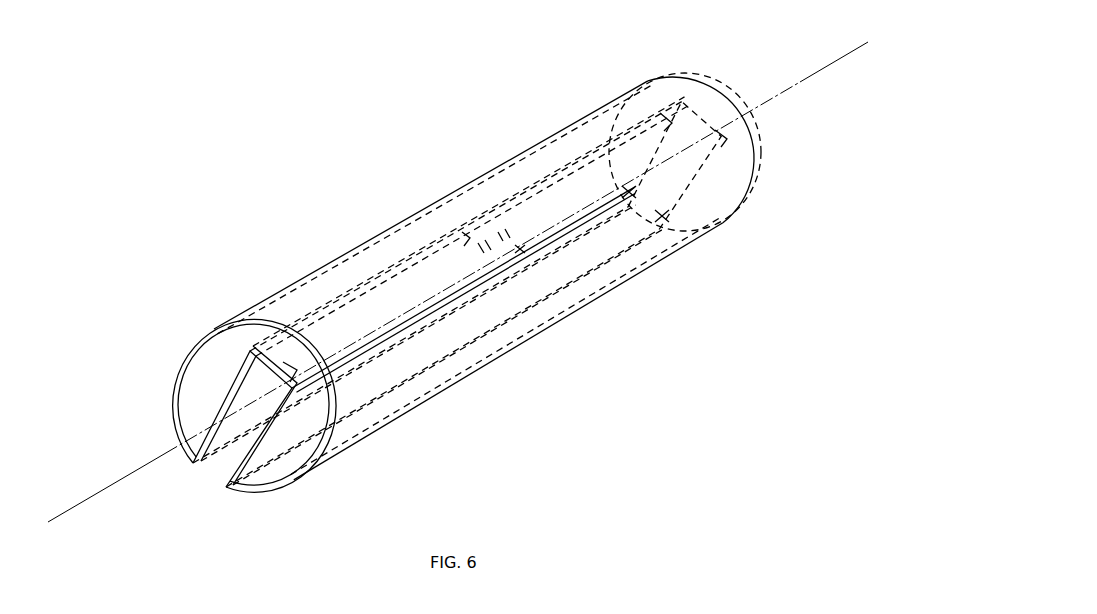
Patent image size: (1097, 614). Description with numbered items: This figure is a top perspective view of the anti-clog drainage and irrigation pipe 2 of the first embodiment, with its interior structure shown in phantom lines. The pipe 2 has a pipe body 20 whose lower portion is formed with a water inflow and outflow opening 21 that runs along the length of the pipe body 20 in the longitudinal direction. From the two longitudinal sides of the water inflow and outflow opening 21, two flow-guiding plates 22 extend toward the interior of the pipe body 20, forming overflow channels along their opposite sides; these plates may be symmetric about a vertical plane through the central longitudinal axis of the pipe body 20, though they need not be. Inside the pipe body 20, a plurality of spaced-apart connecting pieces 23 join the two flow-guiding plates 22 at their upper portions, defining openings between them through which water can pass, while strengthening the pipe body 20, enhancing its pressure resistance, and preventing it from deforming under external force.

The anti-clog drainage and irrigation pipe 2 is at (325, 193).
The pipe body 20 is at (535, 307).
The water inflow and outflow opening 21 is at (220, 473).
The flow-guiding plates 22 is at (247, 440).
The connecting pieces 23 is at (690, 130).